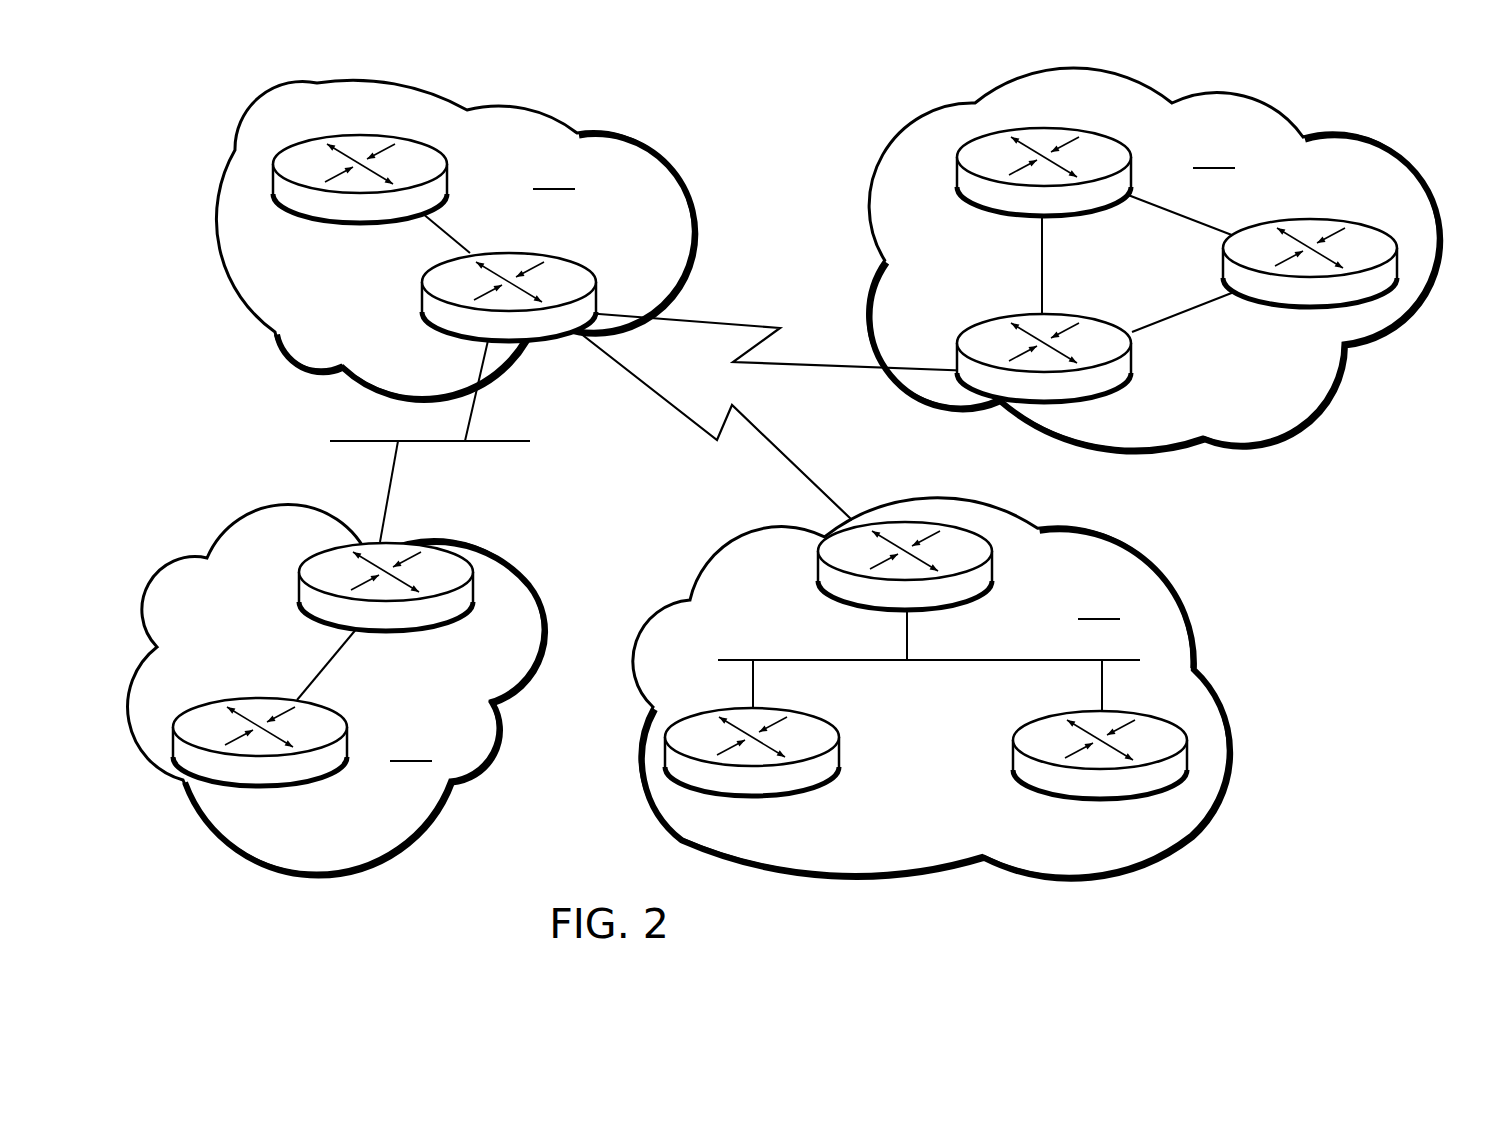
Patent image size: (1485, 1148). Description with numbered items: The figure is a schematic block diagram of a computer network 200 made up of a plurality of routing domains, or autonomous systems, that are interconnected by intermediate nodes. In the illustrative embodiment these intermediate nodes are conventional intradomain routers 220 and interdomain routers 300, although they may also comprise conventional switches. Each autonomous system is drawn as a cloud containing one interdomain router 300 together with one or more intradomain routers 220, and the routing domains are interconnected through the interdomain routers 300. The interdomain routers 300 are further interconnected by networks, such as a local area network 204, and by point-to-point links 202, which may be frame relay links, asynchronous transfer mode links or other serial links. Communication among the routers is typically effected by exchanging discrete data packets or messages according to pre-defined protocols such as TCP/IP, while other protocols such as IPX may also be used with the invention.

The computer network 200 is at (793, 473).
The point-to-point link 202 is at (860, 372).
The local area network 204 is at (496, 444).
The intradomain router 220 is at (360, 135).
The interdomain router 300 is at (579, 267).